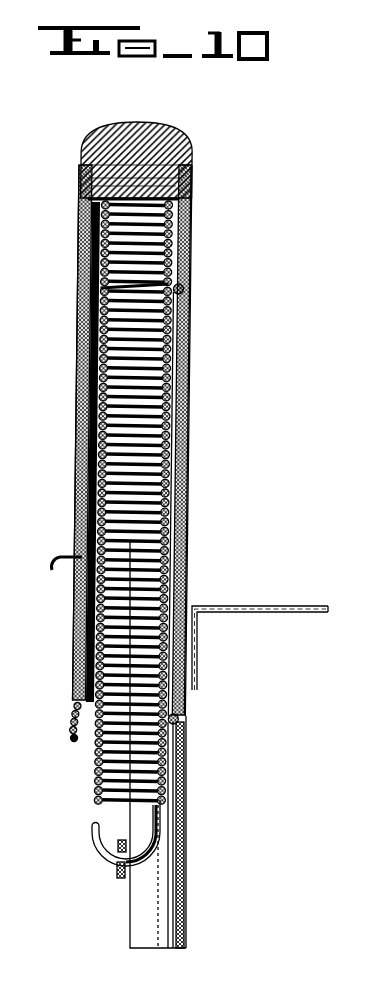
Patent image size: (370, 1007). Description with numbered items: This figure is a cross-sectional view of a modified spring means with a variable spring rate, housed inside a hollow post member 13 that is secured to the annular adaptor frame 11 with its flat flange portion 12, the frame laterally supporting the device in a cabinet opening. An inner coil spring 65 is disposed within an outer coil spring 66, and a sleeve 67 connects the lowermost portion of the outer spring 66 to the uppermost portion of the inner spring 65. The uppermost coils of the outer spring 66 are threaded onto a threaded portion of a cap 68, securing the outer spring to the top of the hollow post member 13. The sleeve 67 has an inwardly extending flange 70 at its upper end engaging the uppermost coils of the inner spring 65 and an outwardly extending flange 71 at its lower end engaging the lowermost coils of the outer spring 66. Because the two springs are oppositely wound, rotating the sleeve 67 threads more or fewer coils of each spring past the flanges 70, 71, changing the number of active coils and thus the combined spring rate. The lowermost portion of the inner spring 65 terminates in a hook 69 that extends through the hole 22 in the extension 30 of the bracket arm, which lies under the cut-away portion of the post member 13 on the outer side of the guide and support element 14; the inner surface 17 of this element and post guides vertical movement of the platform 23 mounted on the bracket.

The cap 68 is at (160, 126).
The outer coil spring 66 is at (193, 204).
The hollow post member 13 is at (194, 236).
The inwardly extending flange 70 is at (192, 284).
The inner coil spring 65 is at (168, 350).
The sleeve 67 is at (192, 410).
The flat flange portion 12 is at (60, 556).
The adaptor frame 11 is at (76, 596).
The platform 23 is at (298, 606).
The outwardly extending flange 71 is at (186, 712).
The inner surface 17 is at (186, 768).
The hook 69 is at (92, 830).
The hole 22 is at (118, 860).
The extension 30 is at (117, 874).
The guide and support element 14 is at (150, 902).